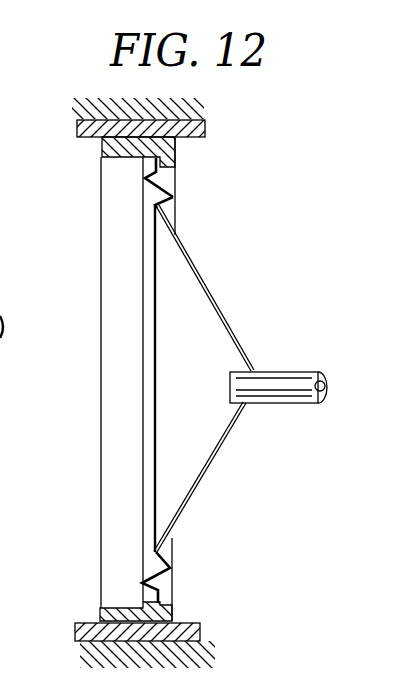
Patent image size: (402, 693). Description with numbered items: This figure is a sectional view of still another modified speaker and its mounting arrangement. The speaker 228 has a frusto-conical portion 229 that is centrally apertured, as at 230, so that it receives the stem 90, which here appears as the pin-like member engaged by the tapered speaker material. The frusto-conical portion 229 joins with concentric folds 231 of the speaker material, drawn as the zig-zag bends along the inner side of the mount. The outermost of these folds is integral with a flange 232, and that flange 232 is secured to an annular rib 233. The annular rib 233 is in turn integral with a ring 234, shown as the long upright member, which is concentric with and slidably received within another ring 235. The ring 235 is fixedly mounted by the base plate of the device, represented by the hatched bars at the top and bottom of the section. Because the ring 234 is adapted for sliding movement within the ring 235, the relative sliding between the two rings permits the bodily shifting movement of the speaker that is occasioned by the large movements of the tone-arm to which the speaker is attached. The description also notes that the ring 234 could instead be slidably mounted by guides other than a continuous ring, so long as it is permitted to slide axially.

The stem 90 is at (290, 372).
The speaker 228 is at (209, 474).
The frusto-conical portion 229 is at (228, 440).
The central aperture 230 is at (253, 370).
The concentric folds 231 is at (168, 206).
The flange 232 is at (162, 169).
The annular rib 233 is at (142, 600).
The ring 234 is at (100, 614).
The ring 235 is at (200, 632).